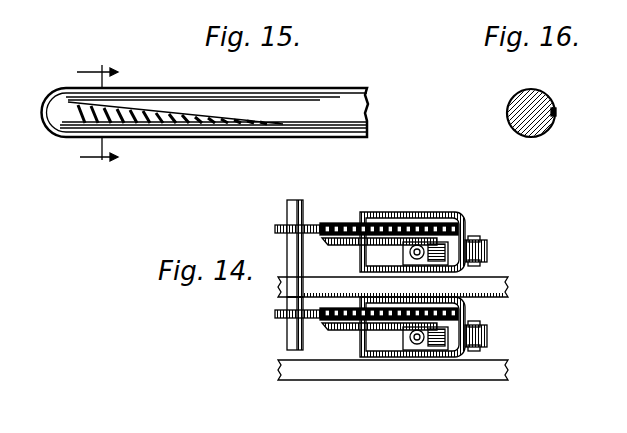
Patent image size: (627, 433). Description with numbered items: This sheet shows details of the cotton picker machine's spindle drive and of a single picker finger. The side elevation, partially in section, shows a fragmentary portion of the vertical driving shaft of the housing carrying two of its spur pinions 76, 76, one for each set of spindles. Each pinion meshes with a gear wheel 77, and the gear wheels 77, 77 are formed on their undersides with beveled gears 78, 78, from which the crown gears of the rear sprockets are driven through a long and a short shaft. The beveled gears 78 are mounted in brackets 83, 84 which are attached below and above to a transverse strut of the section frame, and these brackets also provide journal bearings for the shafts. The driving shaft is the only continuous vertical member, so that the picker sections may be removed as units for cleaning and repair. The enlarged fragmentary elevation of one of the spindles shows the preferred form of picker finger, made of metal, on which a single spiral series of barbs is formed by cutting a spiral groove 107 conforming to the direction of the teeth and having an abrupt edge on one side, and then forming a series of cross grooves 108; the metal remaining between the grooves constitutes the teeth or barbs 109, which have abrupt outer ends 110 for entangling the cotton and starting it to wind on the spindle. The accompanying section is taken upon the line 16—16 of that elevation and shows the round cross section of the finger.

In FIG. 15, the section line 16— 16 is at (97, 111).
In FIG. 15, the spiral groove 107 is at (173, 120).
In FIG. 15, the cross grooves 108 is at (143, 102).
In FIG. 15, the teeth or barbs 109 is at (207, 117).
In FIG. 16, the abrupt outer ends 110 is at (555, 109).
In FIG. 14, the spur pinions 76 is at (275, 229).
In FIG. 14, the gear wheels 77 is at (332, 223).
In FIG. 14, the beveled gears 78 is at (342, 246).
In FIG. 14, the bracket 83 is at (408, 212).
In FIG. 14, the bracket 84 is at (410, 273).